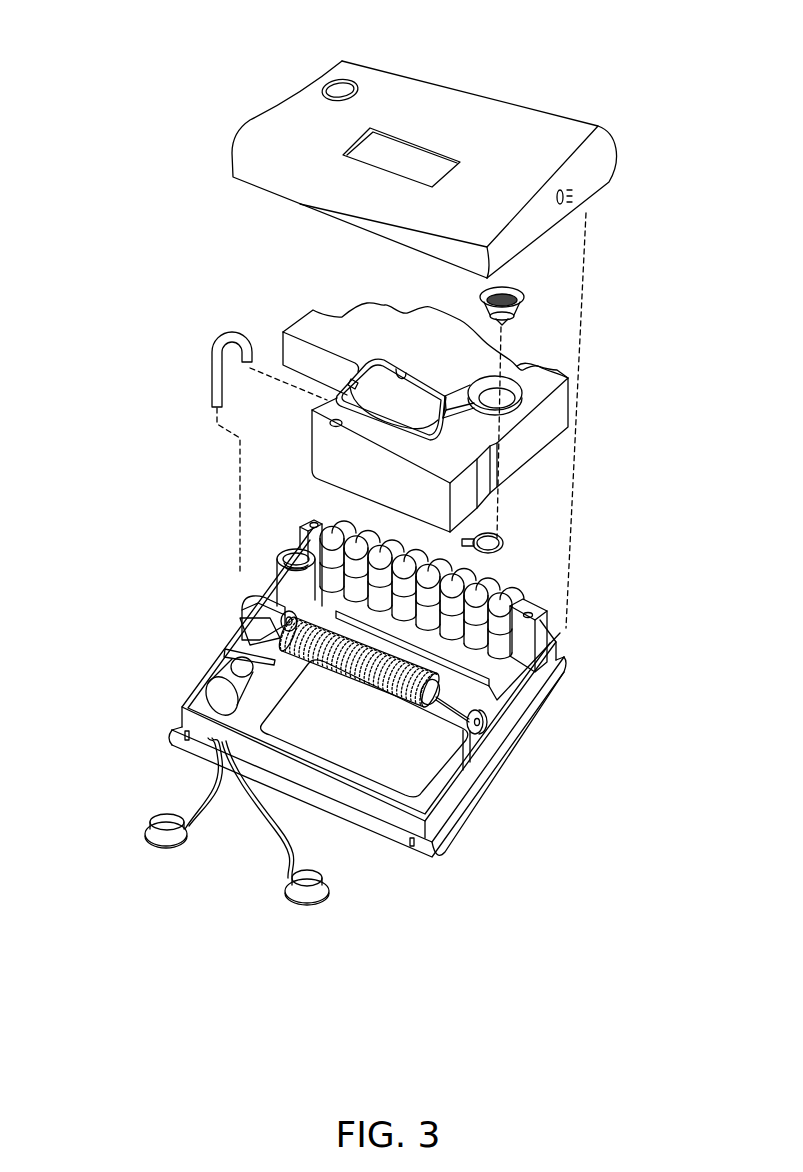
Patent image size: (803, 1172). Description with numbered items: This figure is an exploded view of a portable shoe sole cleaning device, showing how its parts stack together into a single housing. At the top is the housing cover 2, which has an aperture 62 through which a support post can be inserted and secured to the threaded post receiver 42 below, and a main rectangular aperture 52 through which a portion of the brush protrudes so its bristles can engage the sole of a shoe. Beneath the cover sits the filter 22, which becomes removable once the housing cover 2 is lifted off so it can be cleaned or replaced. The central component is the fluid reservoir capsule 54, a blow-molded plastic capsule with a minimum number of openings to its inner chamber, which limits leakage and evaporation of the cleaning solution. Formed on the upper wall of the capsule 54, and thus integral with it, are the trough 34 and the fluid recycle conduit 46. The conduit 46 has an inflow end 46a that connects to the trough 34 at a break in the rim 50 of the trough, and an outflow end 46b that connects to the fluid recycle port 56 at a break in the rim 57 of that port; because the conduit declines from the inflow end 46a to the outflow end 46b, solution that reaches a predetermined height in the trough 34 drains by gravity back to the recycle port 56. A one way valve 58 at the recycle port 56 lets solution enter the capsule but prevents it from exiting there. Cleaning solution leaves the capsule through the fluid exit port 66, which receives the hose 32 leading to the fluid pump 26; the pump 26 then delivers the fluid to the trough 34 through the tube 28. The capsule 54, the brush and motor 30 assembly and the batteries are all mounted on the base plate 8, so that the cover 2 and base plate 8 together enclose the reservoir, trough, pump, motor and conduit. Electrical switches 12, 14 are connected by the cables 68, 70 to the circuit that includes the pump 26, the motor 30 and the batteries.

The housing cover 2 is at (317, 27).
The base plate 8 is at (435, 835).
The electrical switch 12 is at (147, 823).
The electrical switch 14 is at (287, 883).
The filter 22 is at (523, 287).
The fluid pump 26 is at (222, 678).
The tube 28 is at (233, 644).
The motor 30 is at (250, 603).
The hose 32 is at (212, 336).
The trough 34 is at (388, 372).
The threaded post receiver 42 is at (297, 548).
The fluid recycle conduit 46 is at (515, 392).
The inflow end 46a is at (475, 416).
The outflow end 46b is at (475, 380).
The rim 50 is at (443, 432).
The main rectangular aperture 52 is at (405, 152).
The fluid reservoir capsule 54 is at (558, 418).
The fluid recycle port 56 is at (560, 385).
The rim 57 is at (514, 370).
The one way valve 58 is at (512, 535).
The aperture 62 is at (348, 84).
The fluid exit port 66 is at (330, 420).
The cable 68 is at (203, 803).
The cable 70 is at (274, 834).